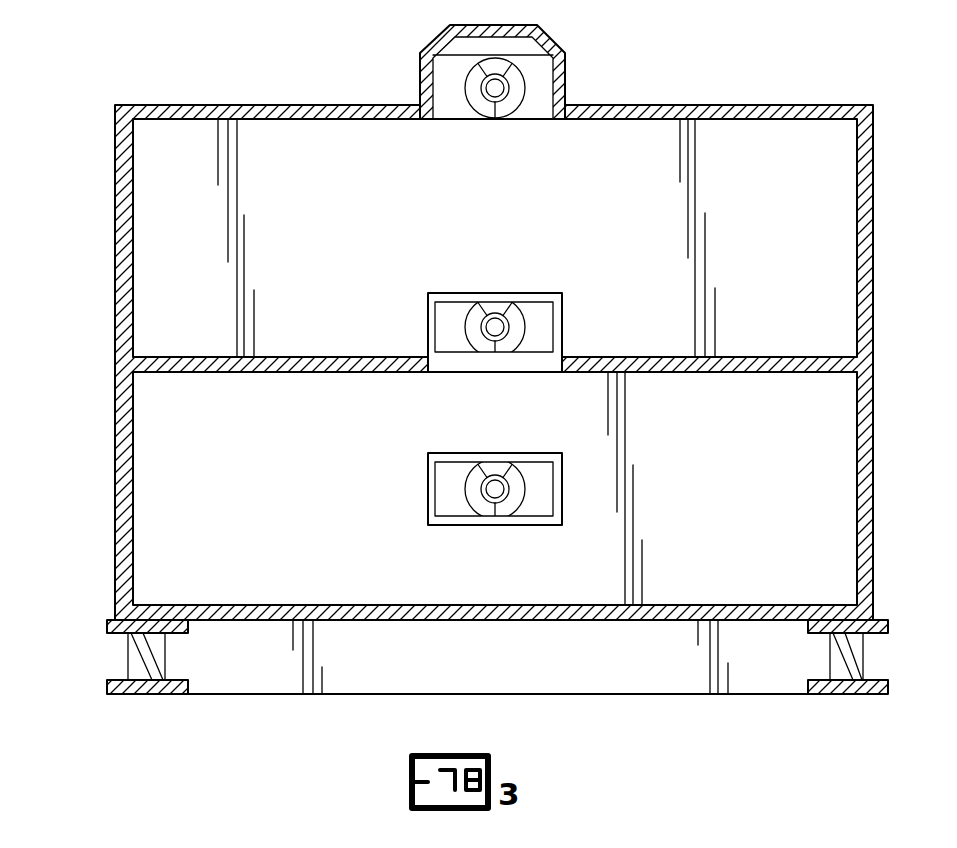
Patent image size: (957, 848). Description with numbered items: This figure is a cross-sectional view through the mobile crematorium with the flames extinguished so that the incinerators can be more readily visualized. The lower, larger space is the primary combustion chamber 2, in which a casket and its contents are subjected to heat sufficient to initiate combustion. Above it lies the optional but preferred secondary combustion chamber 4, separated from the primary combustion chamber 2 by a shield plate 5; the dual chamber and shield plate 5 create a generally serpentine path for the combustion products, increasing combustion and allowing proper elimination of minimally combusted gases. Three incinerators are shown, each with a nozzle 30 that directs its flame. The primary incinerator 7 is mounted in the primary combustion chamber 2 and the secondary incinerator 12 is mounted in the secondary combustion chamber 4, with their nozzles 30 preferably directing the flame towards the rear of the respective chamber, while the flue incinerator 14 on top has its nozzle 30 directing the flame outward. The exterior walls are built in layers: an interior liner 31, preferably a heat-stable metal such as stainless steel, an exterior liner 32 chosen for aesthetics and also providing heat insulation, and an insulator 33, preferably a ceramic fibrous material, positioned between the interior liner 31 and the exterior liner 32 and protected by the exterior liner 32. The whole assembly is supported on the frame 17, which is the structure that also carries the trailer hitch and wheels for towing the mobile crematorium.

The primary combustion chamber 2 is at (316, 498).
The secondary combustion chamber 4 is at (313, 231).
The shield plate 5 is at (333, 357).
The primary incinerator 7 is at (563, 477).
The secondary incinerator 12 is at (562, 330).
The flue incinerator 14 is at (565, 80).
The frame 17 is at (143, 682).
The nozzle 30 is at (512, 62).
The interior liner 31 is at (767, 122).
The exterior liner 32 is at (245, 105).
The insulator 33 is at (323, 107).